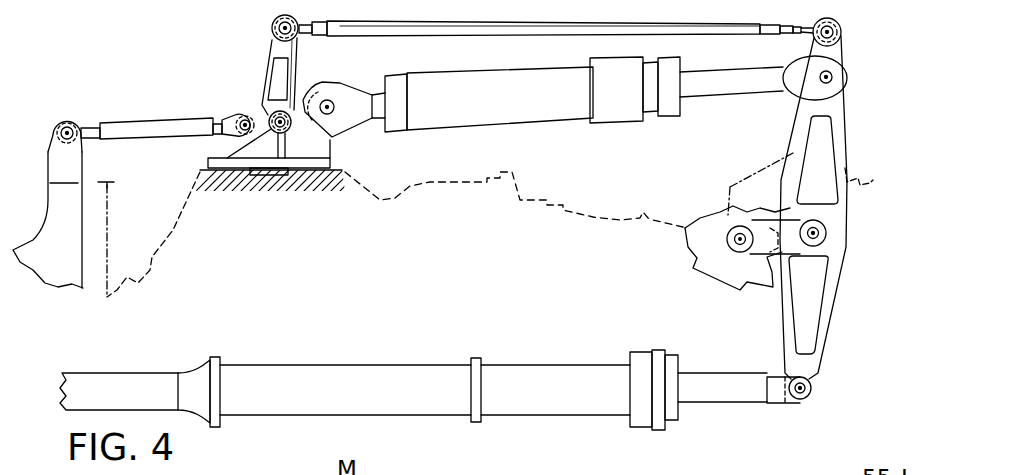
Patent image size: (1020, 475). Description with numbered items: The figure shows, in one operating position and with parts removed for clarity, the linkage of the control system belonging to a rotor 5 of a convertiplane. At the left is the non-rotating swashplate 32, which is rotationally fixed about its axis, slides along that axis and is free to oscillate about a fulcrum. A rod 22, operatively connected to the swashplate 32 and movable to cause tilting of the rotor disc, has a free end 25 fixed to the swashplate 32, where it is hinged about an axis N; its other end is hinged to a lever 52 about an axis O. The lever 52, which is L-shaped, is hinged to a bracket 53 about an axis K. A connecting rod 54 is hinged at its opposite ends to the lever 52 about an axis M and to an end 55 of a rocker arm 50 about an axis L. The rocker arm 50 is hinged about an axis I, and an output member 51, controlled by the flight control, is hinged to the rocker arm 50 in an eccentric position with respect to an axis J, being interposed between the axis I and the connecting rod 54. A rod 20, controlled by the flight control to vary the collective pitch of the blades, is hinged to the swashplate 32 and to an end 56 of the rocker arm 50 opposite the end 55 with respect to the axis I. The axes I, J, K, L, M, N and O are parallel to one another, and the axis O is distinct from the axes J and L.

The rotor 5 is at (22, 150).
The rod 20 is at (393, 385).
The rod 22 is at (145, 132).
The free end 25 is at (82, 128).
The non-rotating swashplate 32 is at (63, 220).
The rocker arm 50 is at (878, 174).
The output member 51 is at (505, 97).
The lever 52 is at (278, 82).
The bracket 53 is at (265, 148).
The connecting rod 54 is at (392, 28).
The end 55 is at (810, 35).
The end 56 is at (817, 375).
The axis N is at (70, 120).
The axis O is at (240, 117).
The axis K is at (286, 130).
The axis M is at (297, 40).
The axis L is at (843, 42).
The axis J is at (834, 78).
The axis I is at (828, 233).